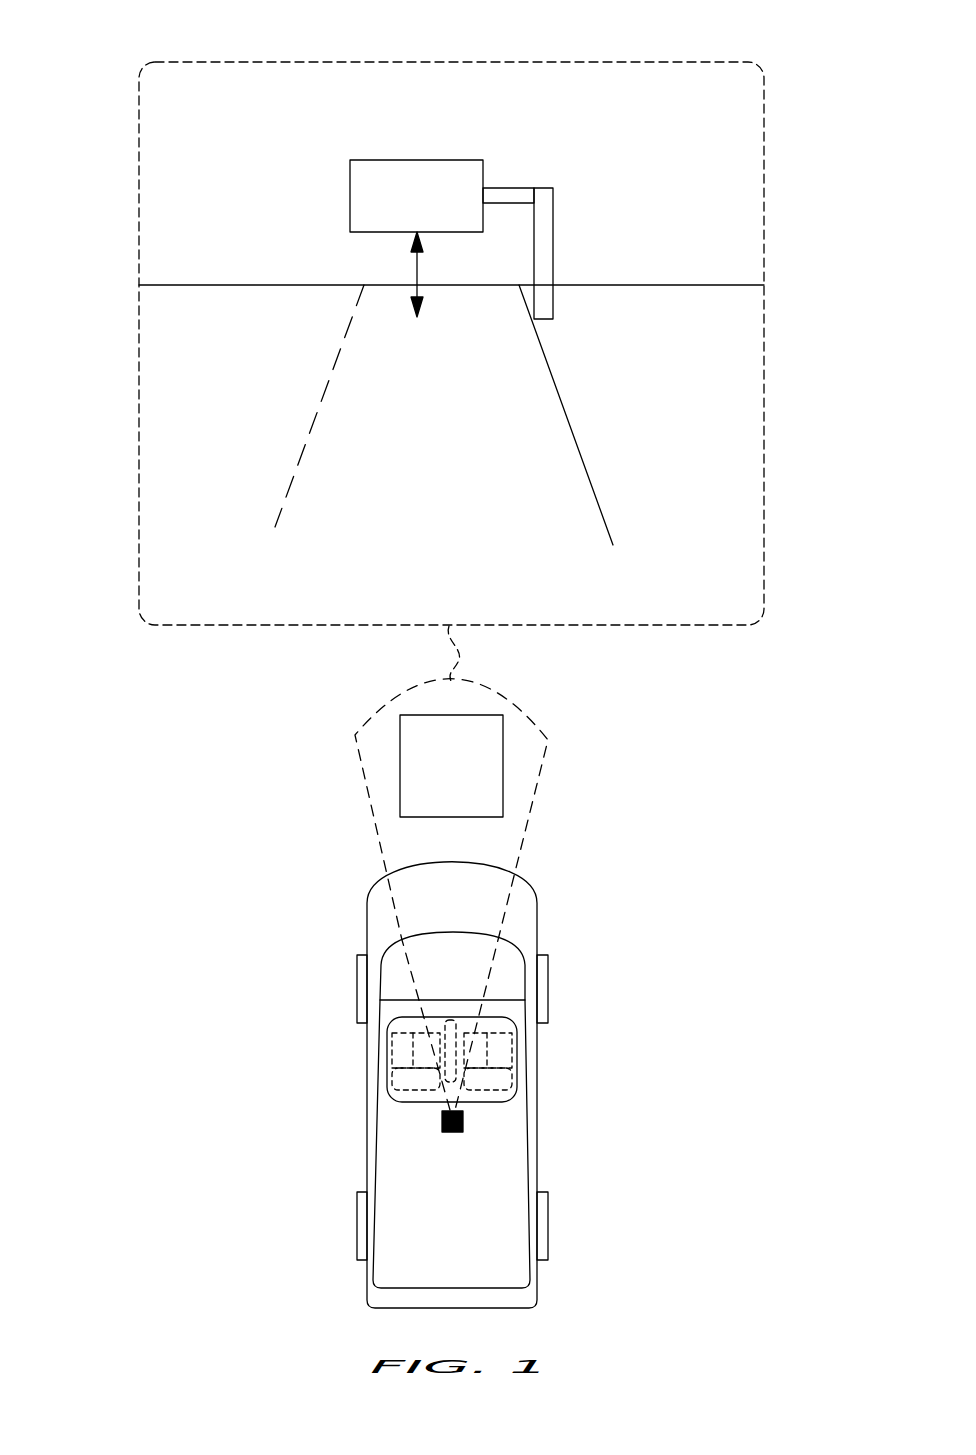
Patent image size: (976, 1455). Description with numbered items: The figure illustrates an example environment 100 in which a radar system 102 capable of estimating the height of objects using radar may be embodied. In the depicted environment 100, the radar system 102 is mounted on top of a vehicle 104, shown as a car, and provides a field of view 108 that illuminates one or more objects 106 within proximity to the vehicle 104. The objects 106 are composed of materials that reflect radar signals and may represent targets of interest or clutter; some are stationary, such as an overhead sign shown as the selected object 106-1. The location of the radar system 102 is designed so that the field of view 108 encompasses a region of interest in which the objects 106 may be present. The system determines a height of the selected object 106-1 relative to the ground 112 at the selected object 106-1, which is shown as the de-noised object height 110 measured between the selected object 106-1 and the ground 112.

The environment 100 is at (90, 36).
The radar system 102 is at (442, 1130).
The vehicle 104 is at (367, 902).
The objects 106 is at (503, 765).
The selected object 106-1 is at (553, 232).
The field of view 108 is at (550, 734).
The de-noised object height 110 is at (415, 265).
The ground 112 is at (459, 372).